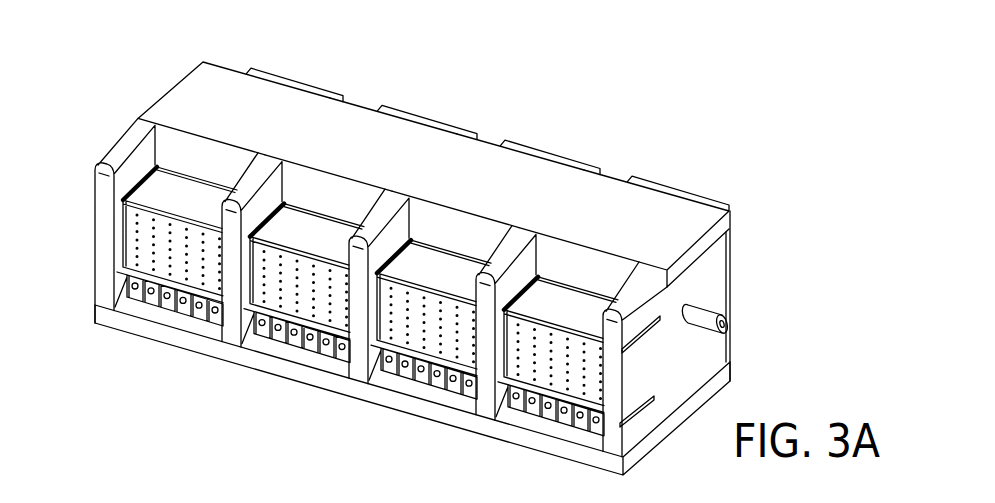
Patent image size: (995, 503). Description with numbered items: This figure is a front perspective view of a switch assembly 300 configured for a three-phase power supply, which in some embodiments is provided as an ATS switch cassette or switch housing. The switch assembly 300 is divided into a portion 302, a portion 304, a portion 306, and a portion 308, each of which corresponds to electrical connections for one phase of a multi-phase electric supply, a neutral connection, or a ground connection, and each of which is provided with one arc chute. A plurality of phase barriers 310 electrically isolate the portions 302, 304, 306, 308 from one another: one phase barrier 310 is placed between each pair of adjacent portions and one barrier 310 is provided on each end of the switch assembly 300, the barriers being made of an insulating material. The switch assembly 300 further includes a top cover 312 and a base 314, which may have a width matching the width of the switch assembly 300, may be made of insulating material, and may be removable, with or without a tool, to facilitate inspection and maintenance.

The switch assembly 300 is at (156, 77).
The portion 302 is at (212, 157).
The portion 304 is at (342, 186).
The portion 306 is at (471, 227).
The portion 308 is at (593, 258).
The phase barrier 310 is at (103, 303).
The top cover 312 is at (697, 218).
The base 314 is at (678, 425).